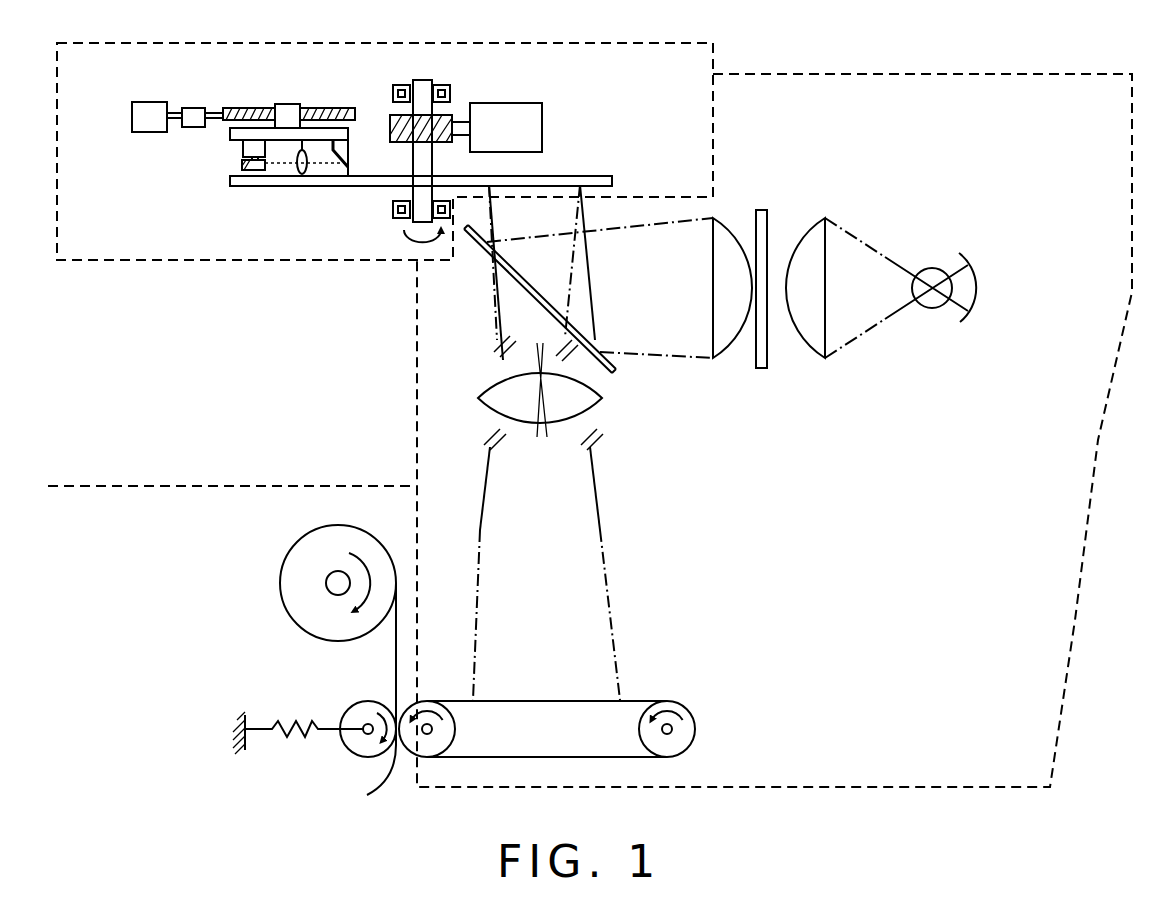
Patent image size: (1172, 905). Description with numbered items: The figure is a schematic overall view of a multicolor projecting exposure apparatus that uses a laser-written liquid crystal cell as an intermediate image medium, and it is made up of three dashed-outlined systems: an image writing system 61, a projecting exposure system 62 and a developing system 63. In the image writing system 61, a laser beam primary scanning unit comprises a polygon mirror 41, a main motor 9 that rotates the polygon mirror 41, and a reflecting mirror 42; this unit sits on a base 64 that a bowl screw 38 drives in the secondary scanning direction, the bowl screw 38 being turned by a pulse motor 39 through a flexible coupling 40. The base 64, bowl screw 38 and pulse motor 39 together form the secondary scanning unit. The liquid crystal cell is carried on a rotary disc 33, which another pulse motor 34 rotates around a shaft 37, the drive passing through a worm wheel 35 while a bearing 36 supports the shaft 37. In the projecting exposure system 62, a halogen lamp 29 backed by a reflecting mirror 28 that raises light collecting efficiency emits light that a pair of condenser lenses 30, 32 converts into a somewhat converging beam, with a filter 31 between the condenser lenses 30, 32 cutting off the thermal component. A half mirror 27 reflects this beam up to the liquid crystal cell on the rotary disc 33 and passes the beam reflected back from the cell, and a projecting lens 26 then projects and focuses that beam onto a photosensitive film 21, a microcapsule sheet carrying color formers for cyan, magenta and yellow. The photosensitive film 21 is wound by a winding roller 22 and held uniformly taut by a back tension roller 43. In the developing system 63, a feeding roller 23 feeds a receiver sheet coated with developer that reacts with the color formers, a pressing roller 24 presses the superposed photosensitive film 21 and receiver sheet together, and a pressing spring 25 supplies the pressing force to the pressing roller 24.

The main motor 9 is at (242, 147).
The photosensitive film 21 is at (640, 700).
The winding roller 22 is at (440, 736).
The feeding roller 23 is at (280, 580).
The pressing roller 24 is at (356, 716).
The pressing spring 25 is at (296, 718).
The projecting lens 26 is at (602, 398).
The half mirror 27 is at (617, 368).
The reflecting mirror 28 is at (958, 260).
The halogen lamp 29 is at (928, 305).
The condenser lens 30 is at (810, 245).
The filter 31 is at (762, 215).
The condenser lens 32 is at (720, 235).
The rotary disc 33 is at (605, 176).
The pulse motor 34 is at (500, 110).
The worm wheel 35 is at (390, 132).
The bearing 36 is at (456, 62).
The shaft 37 is at (420, 82).
The bowl screw 38 is at (235, 108).
The pulse motor 39 is at (146, 112).
The flexible coupling 40 is at (192, 112).
The polygon mirror 41 is at (245, 164).
The reflecting mirror 42 is at (346, 170).
The back tension roller 43 is at (688, 723).
The image writing system 61 is at (97, 264).
The projecting exposure system 62 is at (1068, 682).
The developing system 63 is at (110, 485).
The base 64 is at (288, 112).